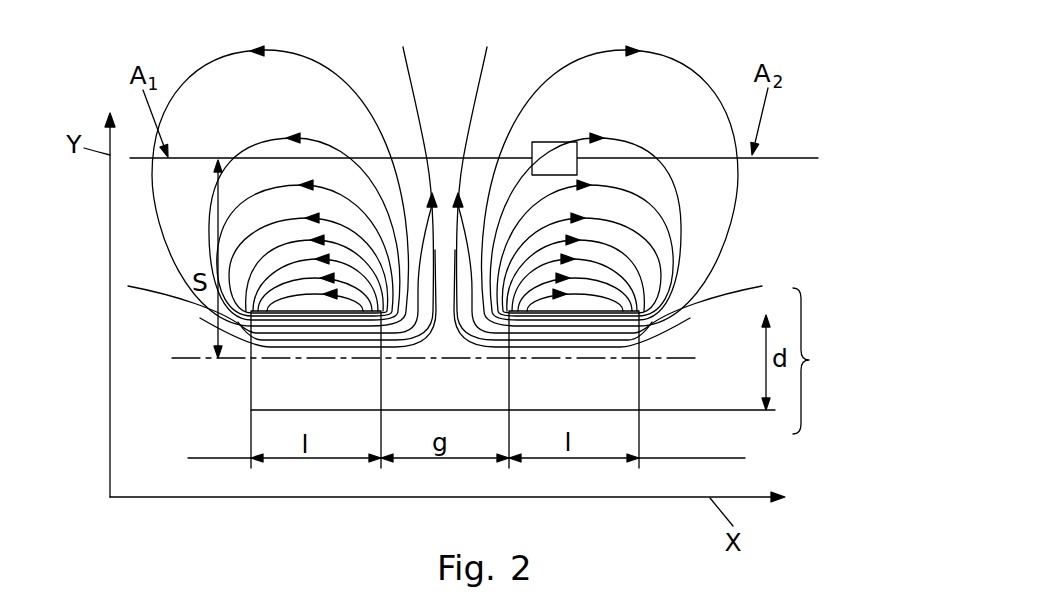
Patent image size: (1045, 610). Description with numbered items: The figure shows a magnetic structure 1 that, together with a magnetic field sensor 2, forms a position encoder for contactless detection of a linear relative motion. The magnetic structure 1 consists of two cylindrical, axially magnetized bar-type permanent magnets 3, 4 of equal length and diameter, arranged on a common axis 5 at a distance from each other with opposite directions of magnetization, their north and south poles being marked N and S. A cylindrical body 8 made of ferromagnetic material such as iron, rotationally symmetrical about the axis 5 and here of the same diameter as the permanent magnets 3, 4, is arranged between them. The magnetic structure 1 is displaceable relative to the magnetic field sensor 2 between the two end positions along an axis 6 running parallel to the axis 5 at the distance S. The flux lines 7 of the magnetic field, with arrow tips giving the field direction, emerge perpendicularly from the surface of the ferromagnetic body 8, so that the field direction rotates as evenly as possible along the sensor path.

The magnetic structure 1 is at (537, 361).
The magnetic field sensor 2 is at (547, 151).
The permanent magnet 3 is at (333, 395).
The permanent magnet 4 is at (593, 395).
The axis 5 is at (196, 362).
The axis 6 is at (790, 159).
The flux lines 7 is at (305, 61).
The cylindrical body 8 is at (463, 398).